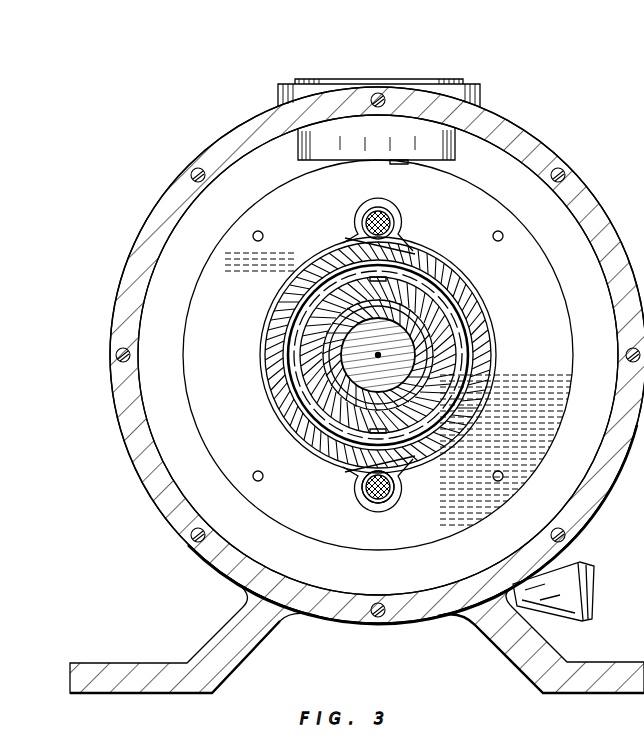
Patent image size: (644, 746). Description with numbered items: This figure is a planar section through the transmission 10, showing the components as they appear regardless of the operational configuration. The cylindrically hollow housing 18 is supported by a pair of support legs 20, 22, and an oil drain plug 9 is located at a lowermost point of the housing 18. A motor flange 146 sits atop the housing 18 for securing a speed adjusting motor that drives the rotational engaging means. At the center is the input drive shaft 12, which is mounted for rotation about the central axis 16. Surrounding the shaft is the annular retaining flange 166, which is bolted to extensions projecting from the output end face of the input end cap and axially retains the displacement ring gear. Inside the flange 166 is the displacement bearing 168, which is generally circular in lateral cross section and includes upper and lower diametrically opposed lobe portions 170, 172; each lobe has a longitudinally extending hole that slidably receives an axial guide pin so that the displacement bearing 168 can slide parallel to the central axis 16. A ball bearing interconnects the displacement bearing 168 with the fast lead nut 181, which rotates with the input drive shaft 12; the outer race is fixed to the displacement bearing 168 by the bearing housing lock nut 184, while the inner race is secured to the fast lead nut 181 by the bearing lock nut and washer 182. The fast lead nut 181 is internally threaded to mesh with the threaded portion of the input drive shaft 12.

The transmission 10 is at (598, 149).
The housing 18 is at (523, 132).
The support leg 20 is at (242, 640).
The support leg 22 is at (527, 650).
The oil drain plug 9 is at (588, 568).
The motor flange 146 is at (462, 83).
The annular retaining flange 166 is at (528, 246).
The displacement bearing 168 is at (410, 239).
The upper lobe portion 170 is at (376, 215).
The lower lobe portion 172 is at (392, 484).
The fast lead nut 181 is at (481, 399).
The bearing lock nut and washer 182 is at (458, 342).
The bearing housing lock nut 184 is at (470, 362).
The central axis 16 is at (420, 332).
The input drive shaft 12 is at (393, 332).